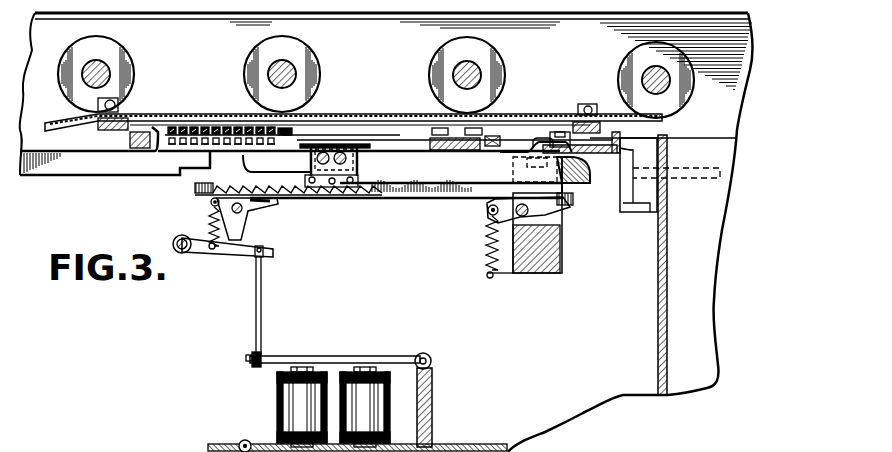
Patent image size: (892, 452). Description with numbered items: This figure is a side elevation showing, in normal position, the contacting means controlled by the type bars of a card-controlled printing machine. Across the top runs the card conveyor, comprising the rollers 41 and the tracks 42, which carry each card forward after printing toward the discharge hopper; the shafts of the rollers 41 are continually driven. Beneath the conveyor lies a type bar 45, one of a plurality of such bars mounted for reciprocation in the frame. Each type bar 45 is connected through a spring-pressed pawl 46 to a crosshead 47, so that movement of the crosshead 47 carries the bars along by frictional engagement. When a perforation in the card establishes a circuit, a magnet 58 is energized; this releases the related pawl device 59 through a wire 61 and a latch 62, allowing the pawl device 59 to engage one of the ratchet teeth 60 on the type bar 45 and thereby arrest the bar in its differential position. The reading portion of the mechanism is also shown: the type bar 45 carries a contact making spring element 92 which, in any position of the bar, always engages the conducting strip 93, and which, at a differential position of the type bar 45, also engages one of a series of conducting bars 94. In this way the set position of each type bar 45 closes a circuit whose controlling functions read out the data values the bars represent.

The rollers 41 is at (248, 62).
The tracks 42 is at (155, 113).
The type bars 45 is at (417, 193).
The spring-pressed pawl 46 is at (503, 212).
The crosshead 47 is at (487, 247).
The magnet 58 is at (290, 407).
The pawl device 59 is at (260, 215).
The ratchet teeth 60 is at (343, 196).
The wire 61 is at (256, 312).
The latch 62 is at (200, 249).
The contact making spring element 92 is at (366, 147).
The conducting strip 93 is at (408, 145).
The conducting bars 94 is at (263, 126).